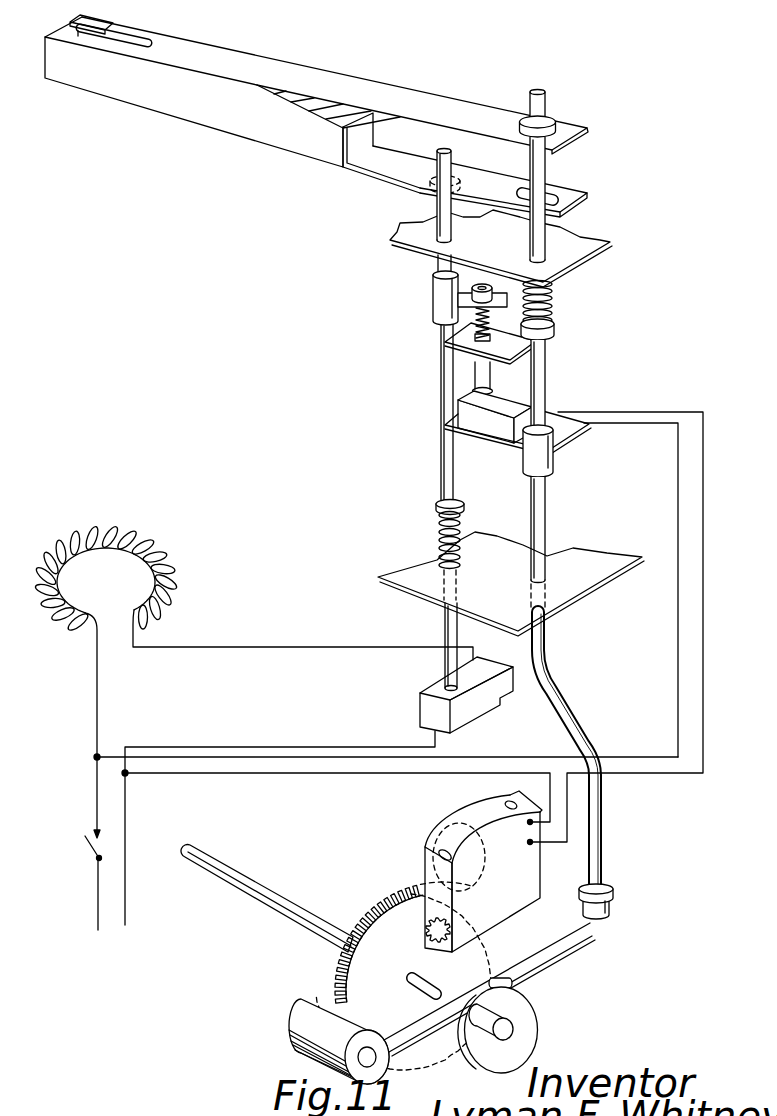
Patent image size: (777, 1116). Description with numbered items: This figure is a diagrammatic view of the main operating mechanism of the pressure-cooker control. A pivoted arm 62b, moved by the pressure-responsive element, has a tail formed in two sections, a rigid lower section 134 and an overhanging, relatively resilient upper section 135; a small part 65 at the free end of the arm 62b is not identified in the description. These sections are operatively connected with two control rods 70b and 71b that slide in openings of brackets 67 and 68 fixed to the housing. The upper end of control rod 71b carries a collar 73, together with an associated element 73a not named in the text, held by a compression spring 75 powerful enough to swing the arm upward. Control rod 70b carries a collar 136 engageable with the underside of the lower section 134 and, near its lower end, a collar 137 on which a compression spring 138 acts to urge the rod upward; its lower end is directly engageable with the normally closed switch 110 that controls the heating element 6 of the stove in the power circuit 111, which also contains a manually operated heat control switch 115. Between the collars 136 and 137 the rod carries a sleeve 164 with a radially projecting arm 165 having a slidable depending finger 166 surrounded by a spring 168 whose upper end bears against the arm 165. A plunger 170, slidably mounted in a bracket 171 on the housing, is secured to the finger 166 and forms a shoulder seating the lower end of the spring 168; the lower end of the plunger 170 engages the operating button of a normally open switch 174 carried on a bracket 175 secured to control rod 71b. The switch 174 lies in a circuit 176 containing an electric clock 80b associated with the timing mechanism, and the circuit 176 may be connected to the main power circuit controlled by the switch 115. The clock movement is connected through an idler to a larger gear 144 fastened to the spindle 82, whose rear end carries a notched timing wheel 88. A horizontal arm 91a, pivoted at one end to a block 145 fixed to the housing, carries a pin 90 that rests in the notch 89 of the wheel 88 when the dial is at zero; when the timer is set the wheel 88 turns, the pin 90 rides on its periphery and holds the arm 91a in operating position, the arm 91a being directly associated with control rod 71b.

The key 65 is at (110, 30).
The arm 62b is at (237, 68).
The upper section 135 is at (458, 107).
The collar 73 is at (546, 119).
The collar 73a is at (558, 131).
The lower section 134 is at (380, 165).
The collar 136 is at (430, 181).
The bracket 67 is at (501, 248).
The compression spring 75 is at (553, 289).
The bracket 171 is at (557, 322).
The control rod 71b is at (550, 341).
The sleeve 164 is at (440, 292).
The arm 165 is at (470, 305).
The finger 166 is at (447, 332).
The spring 168 is at (476, 339).
The control rod 70b is at (441, 389).
The plunger 170 is at (492, 375).
The switch 174 is at (517, 399).
The bracket 175 is at (560, 422).
The collar 137 is at (438, 507).
The compression spring 138 is at (440, 527).
The bracket 68 is at (511, 584).
The control switch 110 is at (483, 701).
The power circuit 111 is at (206, 648).
The heating coils 6 is at (125, 532).
The heat control switch 115 is at (90, 850).
The spindle 82 is at (273, 894).
The gear 144 is at (403, 976).
The block 145 is at (294, 1047).
The circuit 176 is at (638, 758).
The electric clock 80b is at (527, 883).
The pin 90 is at (505, 971).
The arm 91a is at (582, 927).
The notch 89 is at (512, 993).
The timing wheel 88 is at (531, 1024).